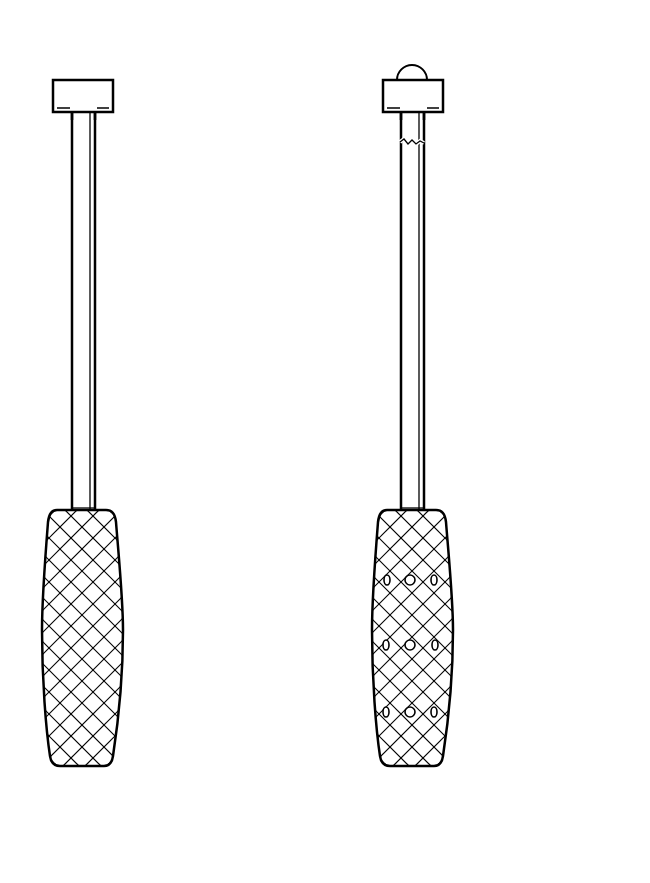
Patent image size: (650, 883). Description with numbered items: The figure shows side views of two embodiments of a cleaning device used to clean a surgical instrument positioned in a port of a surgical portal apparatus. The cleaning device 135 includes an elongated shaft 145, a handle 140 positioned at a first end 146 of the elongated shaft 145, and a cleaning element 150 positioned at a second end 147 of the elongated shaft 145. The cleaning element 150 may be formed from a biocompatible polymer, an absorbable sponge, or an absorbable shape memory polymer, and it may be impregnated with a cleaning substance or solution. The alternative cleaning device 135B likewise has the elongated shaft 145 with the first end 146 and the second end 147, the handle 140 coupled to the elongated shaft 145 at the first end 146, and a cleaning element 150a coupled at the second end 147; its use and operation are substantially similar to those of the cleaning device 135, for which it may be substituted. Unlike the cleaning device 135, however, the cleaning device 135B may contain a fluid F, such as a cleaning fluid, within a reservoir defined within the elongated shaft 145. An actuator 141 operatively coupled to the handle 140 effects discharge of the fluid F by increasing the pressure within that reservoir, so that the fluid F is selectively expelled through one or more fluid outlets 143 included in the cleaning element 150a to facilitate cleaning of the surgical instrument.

In FIG. 3, the cleaning device 135 is at (101, 68).
In FIG. 3A, the cleaning device 135B is at (430, 67).
In FIG. 3, the handle 140 is at (105, 95).
In FIG. 3A, the handle 140 is at (435, 95).
In FIG. 3A, the actuator 141 is at (411, 70).
In FIG. 3, the elongated shaft 145 is at (94, 303).
In FIG. 3A, the elongated shaft 145 is at (424, 303).
In FIG. 3, the first end 146 is at (98, 114).
In FIG. 3A, the first end 146 is at (427, 114).
In FIG. 3, the second end 147 is at (94, 510).
In FIG. 3A, the second end 147 is at (424, 510).
In FIG. 3, the cleaning element 150 is at (102, 552).
In FIG. 3A, the cleaning element 150a is at (433, 552).
In FIG. 3A, the fluid outlets 143 is at (440, 586).
In FIG. 3A, the fluid F is at (412, 374).